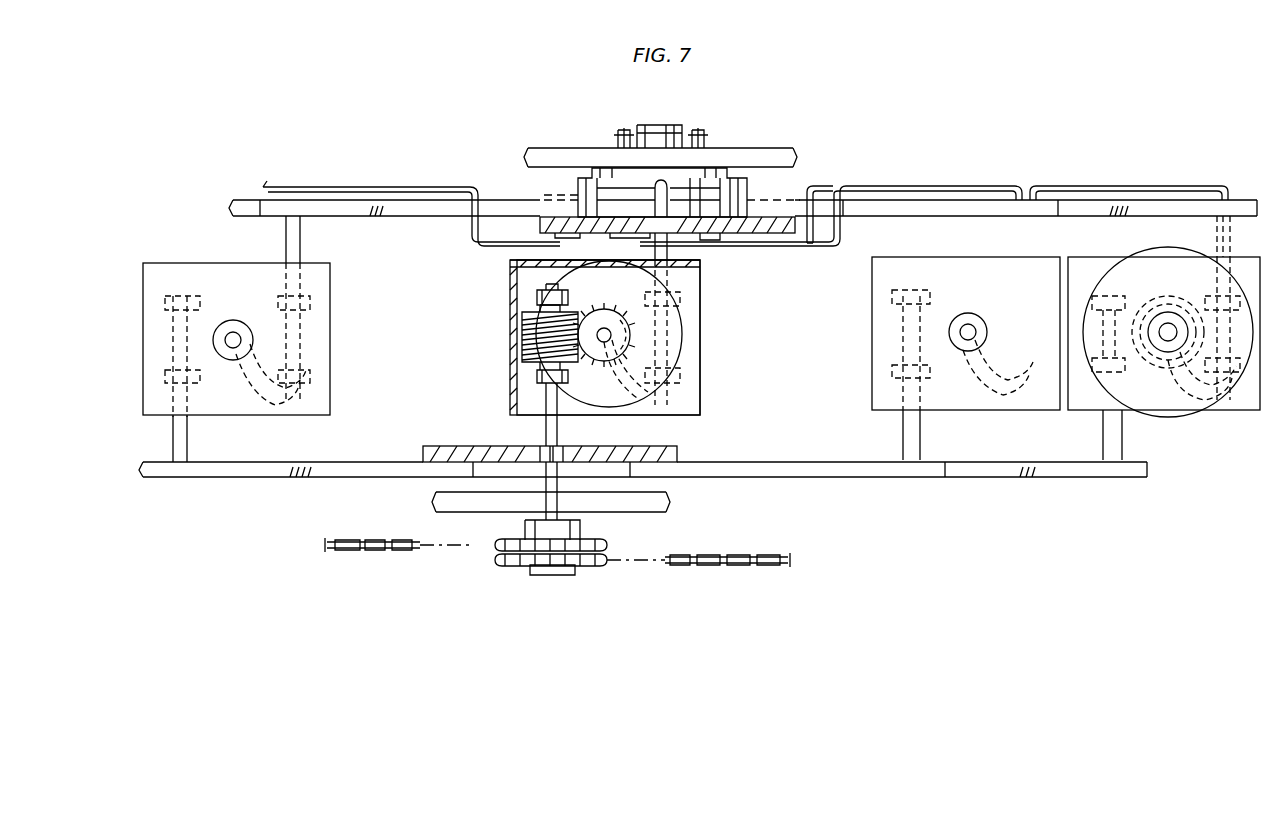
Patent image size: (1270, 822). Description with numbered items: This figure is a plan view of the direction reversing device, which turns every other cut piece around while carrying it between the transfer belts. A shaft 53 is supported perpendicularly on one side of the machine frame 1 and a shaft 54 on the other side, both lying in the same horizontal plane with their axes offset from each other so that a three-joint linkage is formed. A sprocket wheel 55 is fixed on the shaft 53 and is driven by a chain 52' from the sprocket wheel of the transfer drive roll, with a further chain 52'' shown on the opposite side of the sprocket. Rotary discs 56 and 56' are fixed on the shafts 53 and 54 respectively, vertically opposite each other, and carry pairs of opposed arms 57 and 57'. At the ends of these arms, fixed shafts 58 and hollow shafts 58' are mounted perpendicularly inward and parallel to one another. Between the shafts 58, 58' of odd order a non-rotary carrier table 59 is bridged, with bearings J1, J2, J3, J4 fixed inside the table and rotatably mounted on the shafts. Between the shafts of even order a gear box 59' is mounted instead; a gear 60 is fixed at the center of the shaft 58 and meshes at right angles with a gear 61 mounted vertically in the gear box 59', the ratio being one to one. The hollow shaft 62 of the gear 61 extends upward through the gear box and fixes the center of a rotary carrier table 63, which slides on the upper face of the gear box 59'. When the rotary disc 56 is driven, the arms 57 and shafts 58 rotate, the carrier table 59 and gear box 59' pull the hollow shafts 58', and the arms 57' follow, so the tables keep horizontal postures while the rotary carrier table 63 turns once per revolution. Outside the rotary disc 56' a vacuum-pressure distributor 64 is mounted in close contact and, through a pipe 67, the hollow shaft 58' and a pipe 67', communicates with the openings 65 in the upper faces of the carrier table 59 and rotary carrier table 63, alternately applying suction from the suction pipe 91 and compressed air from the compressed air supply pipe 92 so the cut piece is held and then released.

The machine frame 1 is at (765, 160).
The chain 52' is at (397, 566).
The chain 52'' is at (698, 578).
The shaft 53 is at (548, 575).
The shaft 54 is at (666, 133).
The sprocket wheel 55 is at (590, 562).
The rotary disc 56 is at (577, 479).
The rotary disc 56' is at (673, 248).
The arm 57 is at (643, 487).
The arm 57' is at (743, 179).
The shaft 58 is at (624, 368).
The hollow shaft 58' is at (942, 273).
The carrier table 59 is at (701, 359).
The gear box 59' is at (635, 337).
The gear 60 is at (522, 328).
The gear 61 is at (530, 268).
The hollow shaft 62 is at (604, 328).
The rotary carrier table 63 is at (682, 330).
The vacuum-pressure distributor 64 is at (761, 193).
The opening 65 is at (240, 332).
The pipe 67 is at (745, 193).
The pipe 67' is at (831, 389).
The suction pipe 91 is at (618, 136).
The compressed air supply pipe 92 is at (704, 136).
The bearing J1 is at (537, 298).
The bearing J2 is at (537, 376).
The bearing J3 is at (680, 298).
The bearing J4 is at (680, 378).